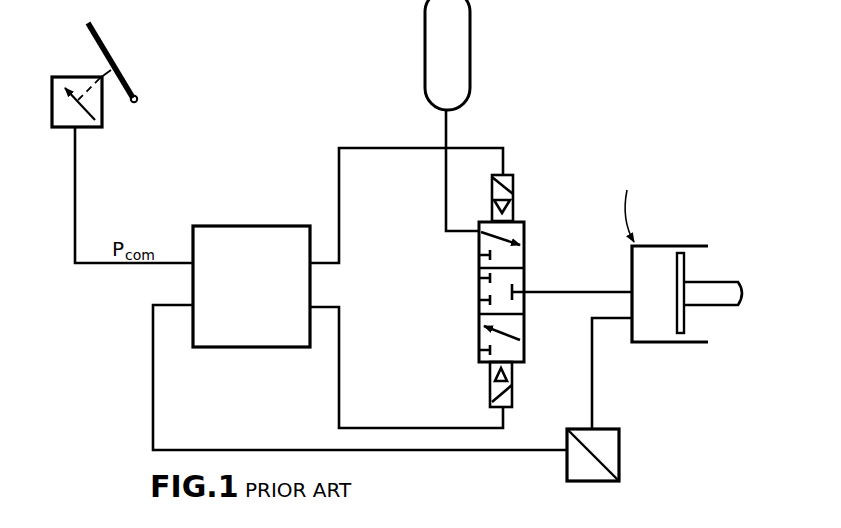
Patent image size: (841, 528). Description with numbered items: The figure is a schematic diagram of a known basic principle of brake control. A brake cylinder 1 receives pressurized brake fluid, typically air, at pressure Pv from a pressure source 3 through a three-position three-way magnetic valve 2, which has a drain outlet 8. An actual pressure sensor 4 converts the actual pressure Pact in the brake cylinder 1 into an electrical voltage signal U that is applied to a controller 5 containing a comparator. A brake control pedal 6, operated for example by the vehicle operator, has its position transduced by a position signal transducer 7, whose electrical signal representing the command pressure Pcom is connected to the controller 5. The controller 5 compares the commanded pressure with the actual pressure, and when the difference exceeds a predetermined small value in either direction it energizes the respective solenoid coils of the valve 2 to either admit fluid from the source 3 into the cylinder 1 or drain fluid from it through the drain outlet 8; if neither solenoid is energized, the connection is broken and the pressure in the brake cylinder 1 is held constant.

The brake cylinder 1 is at (657, 258).
The three-position three-way magnetic valve 2 is at (527, 245).
The pressure source 3 is at (470, 38).
The actual pressure sensor 4 is at (619, 458).
The controller 5 is at (245, 226).
The brake control pedal 6 is at (103, 43).
The position signal transducer 7 is at (53, 127).
The drain outlet 8 is at (476, 329).